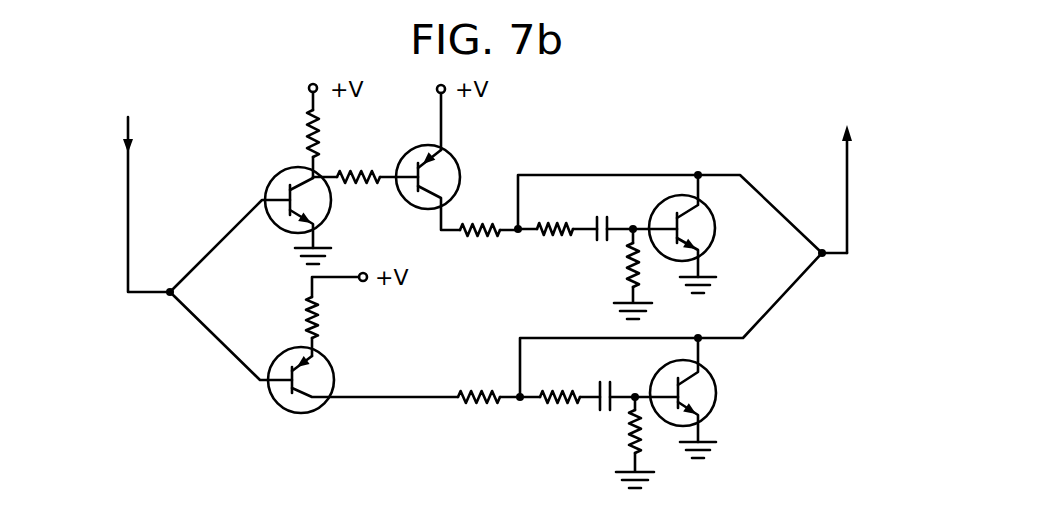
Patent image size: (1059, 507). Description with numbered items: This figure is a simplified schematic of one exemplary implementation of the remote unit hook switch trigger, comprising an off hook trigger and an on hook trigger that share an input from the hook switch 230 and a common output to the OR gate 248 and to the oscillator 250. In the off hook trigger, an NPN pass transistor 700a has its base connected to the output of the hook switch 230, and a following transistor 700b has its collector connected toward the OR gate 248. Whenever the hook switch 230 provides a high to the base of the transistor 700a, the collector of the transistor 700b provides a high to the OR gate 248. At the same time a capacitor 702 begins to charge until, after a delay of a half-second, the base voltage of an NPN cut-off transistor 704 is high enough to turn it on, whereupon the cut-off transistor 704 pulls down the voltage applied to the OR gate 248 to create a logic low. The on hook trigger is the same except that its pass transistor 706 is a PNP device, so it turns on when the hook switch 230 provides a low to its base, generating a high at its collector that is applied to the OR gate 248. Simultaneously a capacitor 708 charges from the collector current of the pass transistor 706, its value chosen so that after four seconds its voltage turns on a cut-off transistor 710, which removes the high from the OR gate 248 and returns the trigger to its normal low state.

The hook switch 230 is at (123, 182).
The OR gate 248 is at (849, 160).
The oscillator 250 is at (849, 116).
The NPN pass transistor 700a is at (297, 172).
The pass transistor 700b is at (450, 167).
The capacitor 702 is at (602, 241).
The NPN cut-off transistor 704 is at (713, 231).
The PNP pass transistor 706 is at (296, 352).
The capacitor 708 is at (603, 408).
The cut-off transistor 710 is at (712, 388).